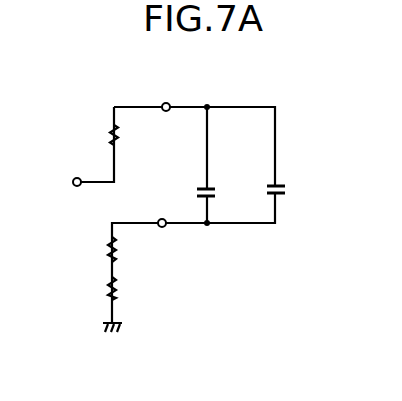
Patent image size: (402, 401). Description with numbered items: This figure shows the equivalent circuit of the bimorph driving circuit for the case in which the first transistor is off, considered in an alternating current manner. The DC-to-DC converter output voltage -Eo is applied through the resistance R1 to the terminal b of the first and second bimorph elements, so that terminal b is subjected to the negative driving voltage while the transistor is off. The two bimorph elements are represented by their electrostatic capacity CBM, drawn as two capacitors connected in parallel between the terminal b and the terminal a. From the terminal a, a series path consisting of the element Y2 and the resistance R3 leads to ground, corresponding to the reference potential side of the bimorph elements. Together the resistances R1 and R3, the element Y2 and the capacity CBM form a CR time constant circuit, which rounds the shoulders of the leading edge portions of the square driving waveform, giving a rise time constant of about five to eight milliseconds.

The DC voltage Eo is at (54, 182).
The terminal b is at (166, 95).
The terminal a is at (162, 211).
The resistance R1 is at (127, 137).
The admittance element Y2 is at (126, 249).
The resistance R3 is at (126, 290).
The electrostatic capacity CBM is at (264, 194).